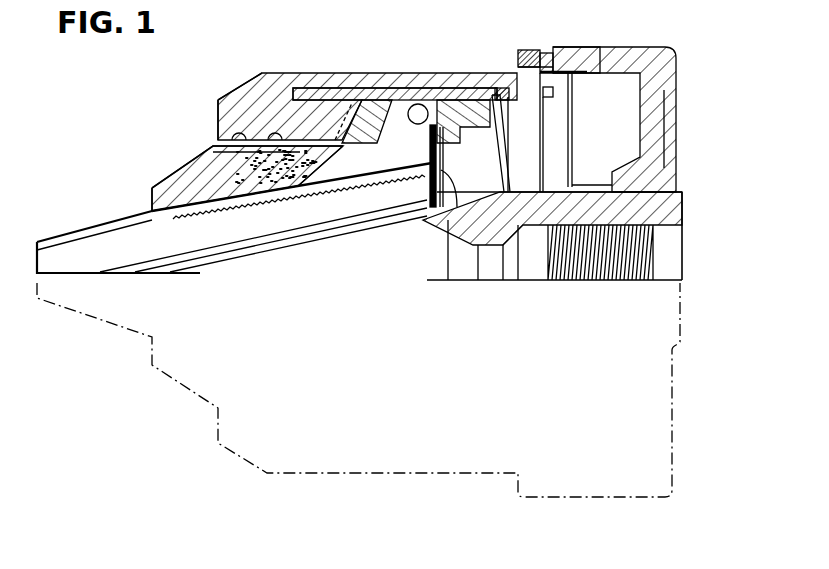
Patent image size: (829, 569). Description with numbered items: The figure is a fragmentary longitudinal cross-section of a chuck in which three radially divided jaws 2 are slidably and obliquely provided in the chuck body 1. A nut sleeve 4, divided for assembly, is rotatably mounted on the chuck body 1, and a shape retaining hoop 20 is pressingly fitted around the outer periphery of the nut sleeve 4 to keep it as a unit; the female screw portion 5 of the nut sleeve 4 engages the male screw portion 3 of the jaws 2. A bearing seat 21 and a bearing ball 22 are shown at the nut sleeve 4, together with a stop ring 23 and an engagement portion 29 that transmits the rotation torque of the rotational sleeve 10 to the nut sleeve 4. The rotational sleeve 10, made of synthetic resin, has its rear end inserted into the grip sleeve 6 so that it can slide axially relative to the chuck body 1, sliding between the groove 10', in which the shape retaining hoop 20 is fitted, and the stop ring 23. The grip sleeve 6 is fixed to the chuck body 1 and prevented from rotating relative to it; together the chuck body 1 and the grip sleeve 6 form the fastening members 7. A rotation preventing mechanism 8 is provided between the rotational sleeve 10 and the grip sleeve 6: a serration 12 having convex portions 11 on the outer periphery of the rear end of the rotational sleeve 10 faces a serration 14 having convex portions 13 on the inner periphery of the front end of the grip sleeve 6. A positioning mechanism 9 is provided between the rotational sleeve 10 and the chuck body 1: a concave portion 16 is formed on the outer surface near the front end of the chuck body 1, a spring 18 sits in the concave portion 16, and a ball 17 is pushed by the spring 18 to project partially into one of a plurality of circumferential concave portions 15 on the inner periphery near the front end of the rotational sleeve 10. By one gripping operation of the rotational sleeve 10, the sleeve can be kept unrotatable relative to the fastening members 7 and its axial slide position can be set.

The chuck body 1 is at (152, 190).
The jaws 2 is at (70, 247).
The male screw portion 3 is at (197, 207).
The nut sleeve 4 is at (377, 100).
The female screw portion 5 is at (440, 222).
The grip sleeve 6 is at (640, 50).
The fastening members 7 is at (685, 174).
The rotation preventing mechanism 8 is at (575, 80).
The positioning mechanism 9 is at (277, 122).
The rotational sleeve 10 is at (367, 86).
The groove 10' is at (395, 66).
The convex portions 11 is at (543, 47).
The serration 12 is at (522, 52).
The convex portions 13 is at (577, 72).
The serration 14 is at (568, 56).
The circumferential concave portions 15 is at (220, 107).
The concave portion 16 is at (307, 182).
The ball 17 is at (235, 190).
The spring 18 is at (275, 193).
The shape retaining hoop 20 is at (462, 97).
The bearing seat 21 is at (432, 100).
The bearing ball 22 is at (424, 100).
The stop ring 23 is at (497, 77).
The engagement portion 29 is at (335, 163).